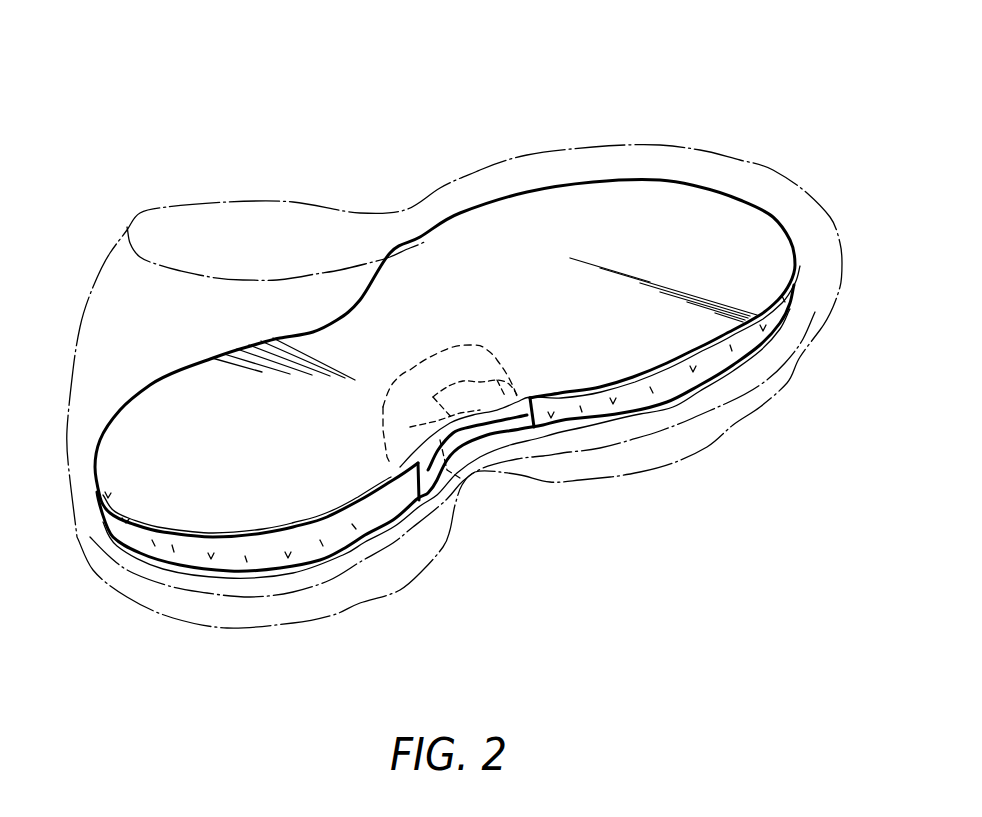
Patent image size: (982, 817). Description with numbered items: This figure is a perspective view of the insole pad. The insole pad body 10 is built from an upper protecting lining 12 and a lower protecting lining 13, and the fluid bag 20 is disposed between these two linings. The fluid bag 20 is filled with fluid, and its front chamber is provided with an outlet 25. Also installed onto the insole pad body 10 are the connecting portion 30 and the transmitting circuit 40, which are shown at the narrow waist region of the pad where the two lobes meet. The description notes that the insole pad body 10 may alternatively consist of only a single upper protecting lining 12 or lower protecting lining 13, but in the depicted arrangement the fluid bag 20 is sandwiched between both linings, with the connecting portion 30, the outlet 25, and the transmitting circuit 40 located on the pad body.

The insole pad body 10 is at (593, 112).
The upper protecting lining 12 is at (688, 197).
The lower protecting lining 13 is at (667, 410).
The fluid bag 20 is at (710, 363).
The outlet 25 is at (505, 392).
The connecting portion 30 is at (477, 440).
The transmitting circuit 40 is at (455, 477).